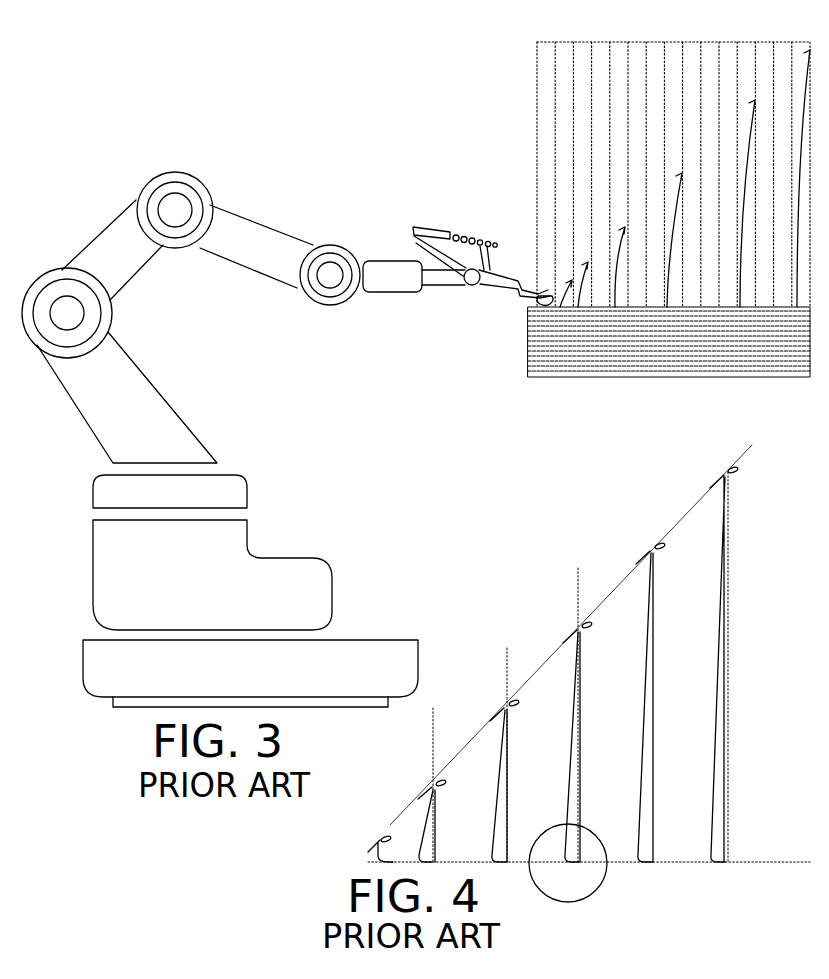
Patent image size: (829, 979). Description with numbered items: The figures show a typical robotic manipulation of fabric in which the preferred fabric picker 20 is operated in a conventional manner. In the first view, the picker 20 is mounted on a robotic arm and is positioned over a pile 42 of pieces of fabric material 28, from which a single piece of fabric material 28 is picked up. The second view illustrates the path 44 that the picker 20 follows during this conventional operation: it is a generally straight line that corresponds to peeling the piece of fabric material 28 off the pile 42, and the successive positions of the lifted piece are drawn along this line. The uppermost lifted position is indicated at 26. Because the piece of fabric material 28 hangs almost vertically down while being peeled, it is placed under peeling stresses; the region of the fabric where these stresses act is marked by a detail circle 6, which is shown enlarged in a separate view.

In FIG. 3, the picker 20 is at (463, 308).
In FIG. 3, the piece of fabric material 28 is at (617, 248).
In FIG. 4, the piece of fabric material 28 is at (645, 597).
In FIG. 3, the pile 42 is at (590, 378).
In FIG. 4, the path 44 is at (540, 667).
In FIG. 4, the plant apex 26 is at (732, 475).
In FIG. 4, the detail circle 6 is at (568, 903).